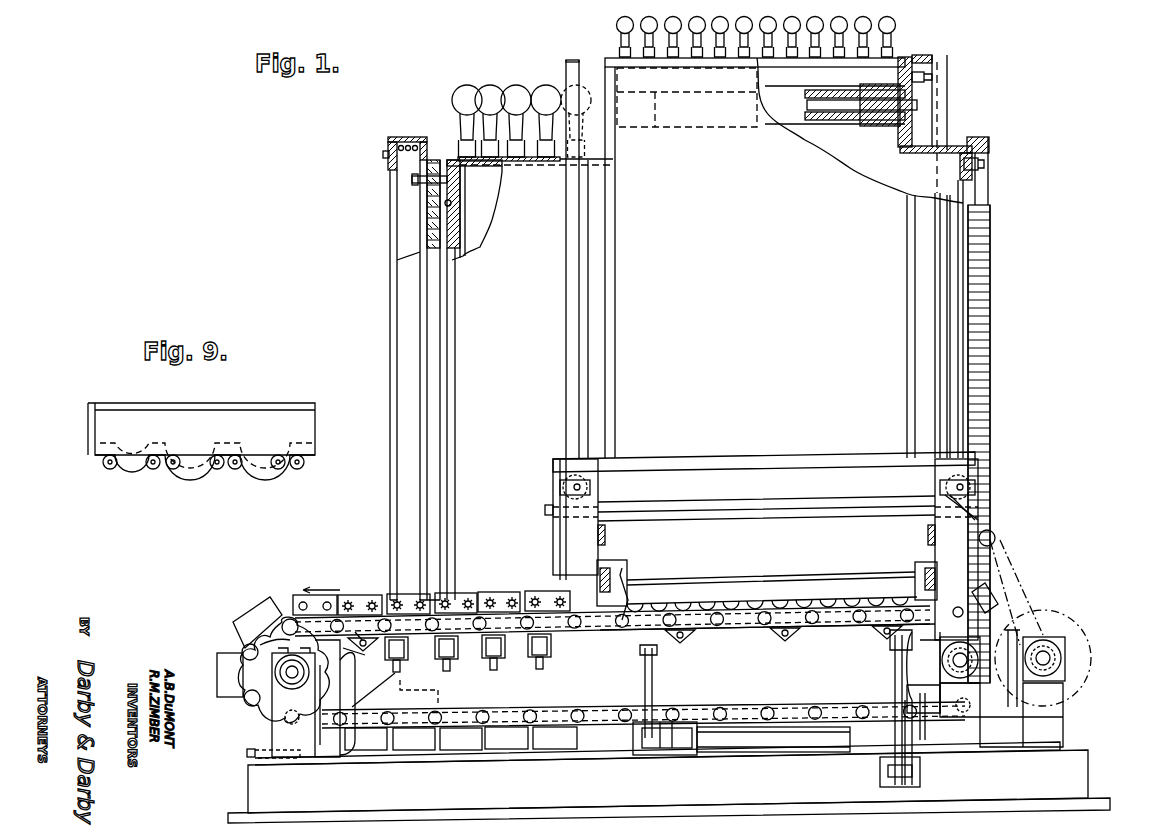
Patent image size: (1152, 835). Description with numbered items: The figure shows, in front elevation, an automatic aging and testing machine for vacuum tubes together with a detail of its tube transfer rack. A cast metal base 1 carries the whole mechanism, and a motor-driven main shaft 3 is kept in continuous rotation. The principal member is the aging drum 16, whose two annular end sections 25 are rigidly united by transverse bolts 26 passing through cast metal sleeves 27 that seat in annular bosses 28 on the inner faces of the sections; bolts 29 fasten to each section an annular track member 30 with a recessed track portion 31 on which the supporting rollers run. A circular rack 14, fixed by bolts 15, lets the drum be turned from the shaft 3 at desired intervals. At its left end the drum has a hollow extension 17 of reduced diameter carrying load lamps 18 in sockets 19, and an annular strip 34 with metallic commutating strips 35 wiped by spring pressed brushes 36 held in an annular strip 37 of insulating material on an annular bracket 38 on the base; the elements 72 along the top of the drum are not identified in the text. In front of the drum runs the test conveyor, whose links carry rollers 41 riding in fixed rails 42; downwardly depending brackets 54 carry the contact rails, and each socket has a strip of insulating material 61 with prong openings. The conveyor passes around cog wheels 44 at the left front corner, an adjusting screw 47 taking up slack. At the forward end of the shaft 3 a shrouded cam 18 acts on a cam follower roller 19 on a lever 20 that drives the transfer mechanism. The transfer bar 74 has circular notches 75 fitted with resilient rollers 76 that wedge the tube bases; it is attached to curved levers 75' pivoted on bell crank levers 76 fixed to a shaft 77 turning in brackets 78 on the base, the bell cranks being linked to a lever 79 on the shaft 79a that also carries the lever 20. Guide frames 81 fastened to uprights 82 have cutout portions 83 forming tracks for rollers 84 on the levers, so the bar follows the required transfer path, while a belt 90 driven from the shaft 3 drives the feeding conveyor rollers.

In FIG. 1, the base 1 is at (1080, 780).
In FIG. 1, the main shaft 3 is at (1060, 656).
In FIG. 1, the circular rack 14 is at (990, 146).
In FIG. 1, the bolts 15 is at (990, 166).
In FIG. 1, the aging drum 16 is at (764, 256).
In FIG. 1, the hollow extension 17 is at (484, 222).
In FIG. 1, the shrouded cam 18 is at (485, 90).
In FIG. 1, the cam follower roller 19 is at (460, 152).
In FIG. 1, the lever 20 is at (1010, 700).
In FIG. 1, the annular end sections 25 is at (912, 130).
In FIG. 1, the transverse bolts 26 is at (920, 103).
In FIG. 1, the cast metal sleeves 27 is at (835, 95).
In FIG. 1, the annular bosses 28 is at (880, 96).
In FIG. 1, the bolts 29 is at (925, 78).
In FIG. 1, the annular track member 30 is at (935, 58).
In FIG. 1, the recessed track portion 31 is at (908, 62).
In FIG. 1, the annular strip 34 is at (462, 250).
In FIG. 1, the commutating strips 35 is at (462, 210).
In FIG. 1, the spring pressed brush 36 is at (412, 178).
In FIG. 1, the annular strip of insulating material 37 is at (432, 248).
In FIG. 1, the annular bracket 38 is at (392, 505).
In FIG. 1, the rollers 41 is at (720, 710).
In FIG. 1, the fixed rails 42 is at (810, 700).
In FIG. 1, the cog wheels 44 is at (248, 705).
In FIG. 1, the adjusting screw 47 is at (247, 752).
In FIG. 1, the brackets 54 is at (690, 640).
In FIG. 1, the strip of insulating material 61 is at (368, 595).
In FIG. 1, the upper lamps 72 is at (888, 27).
In FIG. 1, the transfer bar 74 is at (795, 575).
In FIG. 9, the transfer bar 74 is at (100, 460).
In FIG. 1, the circular notches 75 is at (615, 599).
In FIG. 9, the circular notches 75 is at (116, 452).
In FIG. 1, the curved levers 75' is at (650, 583).
In FIG. 1, the resilient rollers 76 is at (652, 688).
In FIG. 9, the resilient rollers 76 is at (110, 468).
In FIG. 1, the shaft 77 is at (805, 737).
In FIG. 1, the brackets 78 is at (700, 745).
In FIG. 1, the lever 79 is at (935, 712).
In FIG. 1, the shaft 79a is at (932, 705).
In FIG. 1, the guide frames 81 is at (608, 540).
In FIG. 1, the uprights 82 is at (560, 575).
In FIG. 1, the cutout portion 83 is at (935, 552).
In FIG. 1, the rollers 84 is at (915, 560).
In FIG. 1, the belt 90 is at (1030, 580).